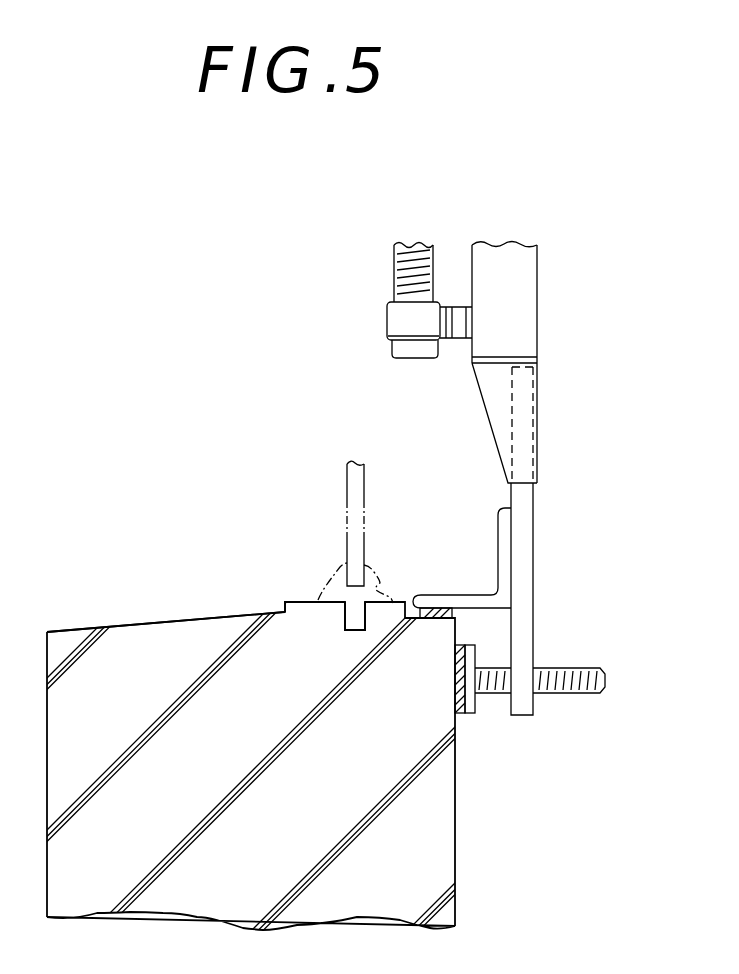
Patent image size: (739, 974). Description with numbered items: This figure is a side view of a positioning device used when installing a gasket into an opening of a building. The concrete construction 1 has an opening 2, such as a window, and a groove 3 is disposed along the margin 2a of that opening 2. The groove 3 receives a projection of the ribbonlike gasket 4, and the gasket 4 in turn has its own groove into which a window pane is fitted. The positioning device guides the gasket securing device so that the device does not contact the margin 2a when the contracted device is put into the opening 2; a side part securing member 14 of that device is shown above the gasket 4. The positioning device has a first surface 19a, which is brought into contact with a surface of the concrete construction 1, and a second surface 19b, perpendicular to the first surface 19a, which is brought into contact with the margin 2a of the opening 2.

The concrete construction 1 is at (455, 860).
The opening 2 is at (190, 474).
The margin of the opening 2a is at (150, 623).
The groove 3 is at (347, 624).
The gasket 4 is at (322, 596).
The side part securing member 14 is at (347, 483).
The first surface 19a is at (455, 678).
The second surface 19b is at (432, 622).